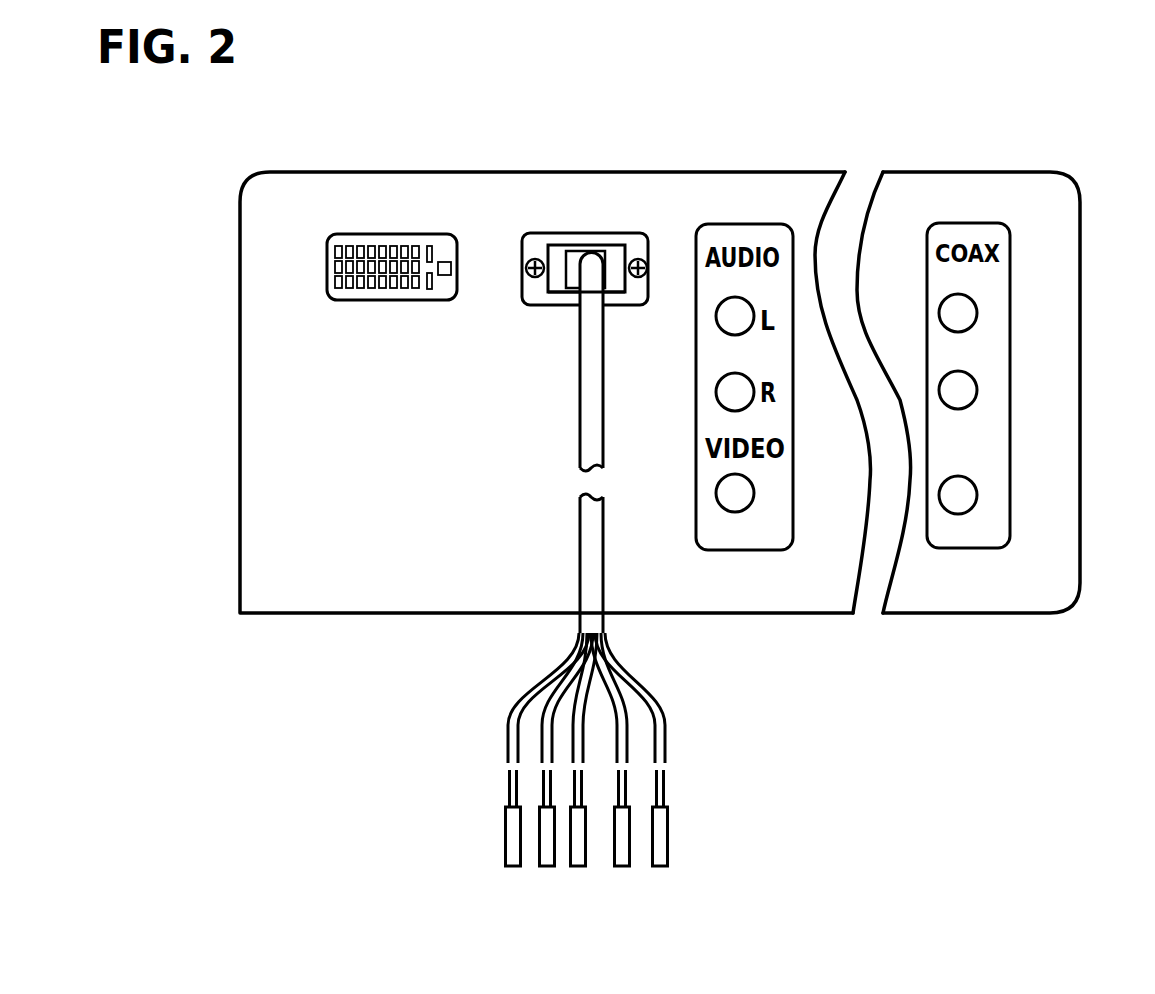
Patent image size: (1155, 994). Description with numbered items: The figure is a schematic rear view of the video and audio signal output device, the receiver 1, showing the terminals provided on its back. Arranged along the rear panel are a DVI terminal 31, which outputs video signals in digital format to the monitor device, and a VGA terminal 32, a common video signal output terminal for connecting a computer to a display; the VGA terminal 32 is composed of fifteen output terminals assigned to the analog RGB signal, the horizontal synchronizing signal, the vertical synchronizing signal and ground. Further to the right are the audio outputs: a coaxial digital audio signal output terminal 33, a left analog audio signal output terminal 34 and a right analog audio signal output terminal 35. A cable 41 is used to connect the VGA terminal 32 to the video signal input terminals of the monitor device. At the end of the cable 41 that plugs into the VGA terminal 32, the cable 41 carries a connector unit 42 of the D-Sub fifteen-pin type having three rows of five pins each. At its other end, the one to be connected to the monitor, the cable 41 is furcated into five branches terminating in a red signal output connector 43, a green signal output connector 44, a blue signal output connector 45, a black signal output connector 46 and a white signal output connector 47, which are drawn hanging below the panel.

The receiver 1 is at (798, 116).
The DVI terminal 31 is at (355, 236).
The VGA terminal 32 is at (536, 233).
The coaxial digital audio signal output terminal 33 is at (968, 310).
The left analog audio signal output terminal 34 is at (968, 382).
The right analog audio signal output terminal 35 is at (968, 476).
The cable 41 is at (592, 383).
The connector unit 42 is at (536, 302).
The red (R) signal output connector 43 is at (515, 830).
The green (G) signal output connector 44 is at (547, 858).
The blue (B) signal output connector 45 is at (577, 867).
The black signal output connector 46 is at (620, 867).
The white signal output connector 47 is at (658, 858).